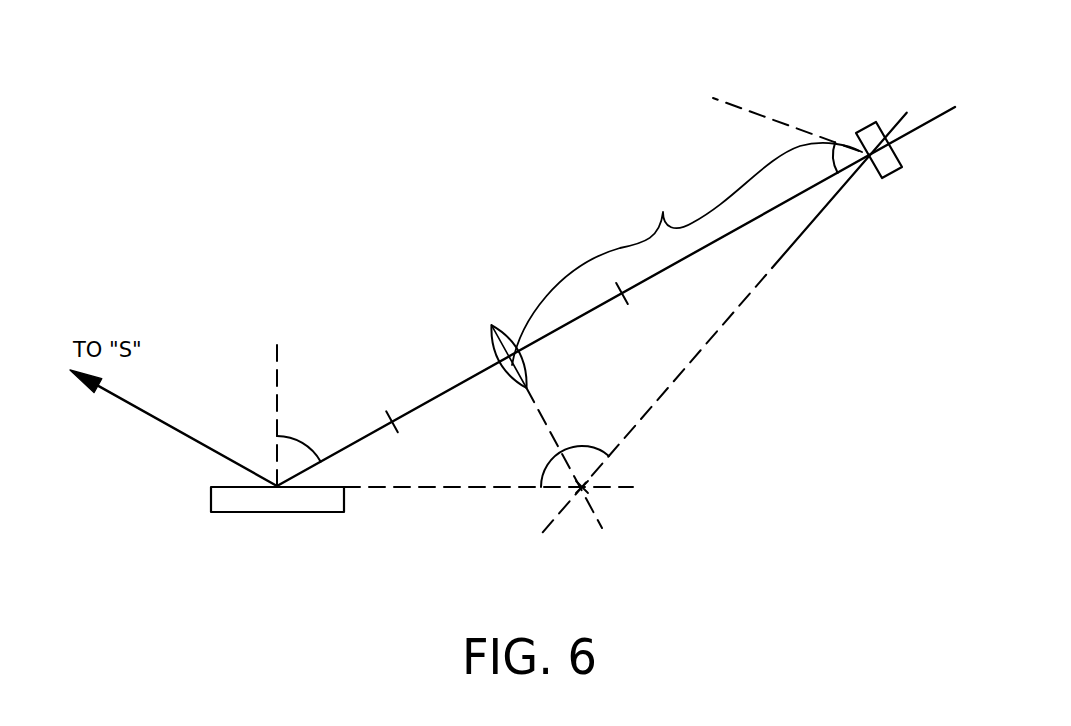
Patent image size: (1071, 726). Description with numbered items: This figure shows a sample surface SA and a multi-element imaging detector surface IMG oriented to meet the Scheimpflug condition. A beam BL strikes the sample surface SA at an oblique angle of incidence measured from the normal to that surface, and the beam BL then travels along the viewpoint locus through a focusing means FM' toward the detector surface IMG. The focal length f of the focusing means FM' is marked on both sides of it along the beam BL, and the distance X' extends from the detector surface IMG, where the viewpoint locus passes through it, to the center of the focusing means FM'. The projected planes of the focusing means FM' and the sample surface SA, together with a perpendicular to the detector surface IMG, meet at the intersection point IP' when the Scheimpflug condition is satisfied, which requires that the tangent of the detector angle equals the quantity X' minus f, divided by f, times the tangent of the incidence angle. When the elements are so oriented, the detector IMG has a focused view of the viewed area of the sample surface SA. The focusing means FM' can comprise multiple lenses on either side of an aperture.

The sample surface SA is at (281, 515).
The beam BL is at (175, 427).
The focusing means FM' is at (455, 336).
The focal length f is at (385, 416).
The distance from detector surface to center of focusing means X' is at (687, 254).
The multi-element imaging detector surface IMG is at (855, 117).
The intersection point IP' is at (636, 519).